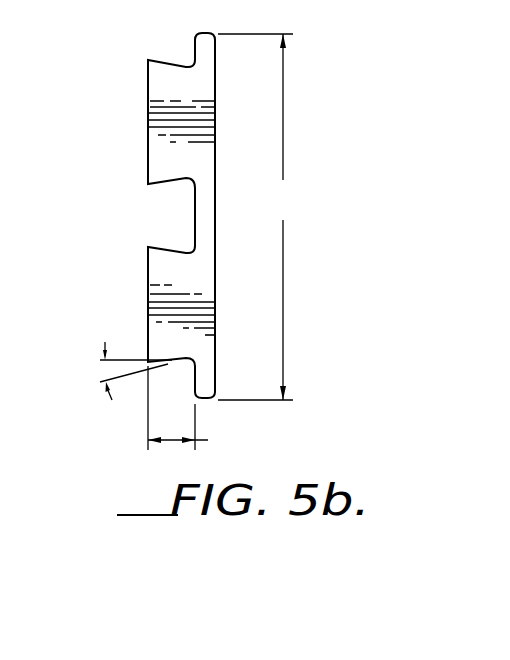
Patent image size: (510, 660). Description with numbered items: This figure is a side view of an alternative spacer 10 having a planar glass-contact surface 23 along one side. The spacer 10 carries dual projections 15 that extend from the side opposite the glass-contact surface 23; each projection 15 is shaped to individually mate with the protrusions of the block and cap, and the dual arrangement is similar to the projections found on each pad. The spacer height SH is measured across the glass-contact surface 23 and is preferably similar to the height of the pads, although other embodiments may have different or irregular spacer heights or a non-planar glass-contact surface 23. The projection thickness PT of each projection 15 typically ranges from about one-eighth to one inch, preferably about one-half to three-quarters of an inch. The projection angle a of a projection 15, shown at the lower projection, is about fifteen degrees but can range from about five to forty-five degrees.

The spacer 10 is at (138, 260).
The projections 15 is at (148, 112).
The glass-contact surface 23 is at (218, 280).
The spacer height SH is at (255, 217).
The projection thickness PT is at (193, 411).
The projection angle a is at (101, 368).